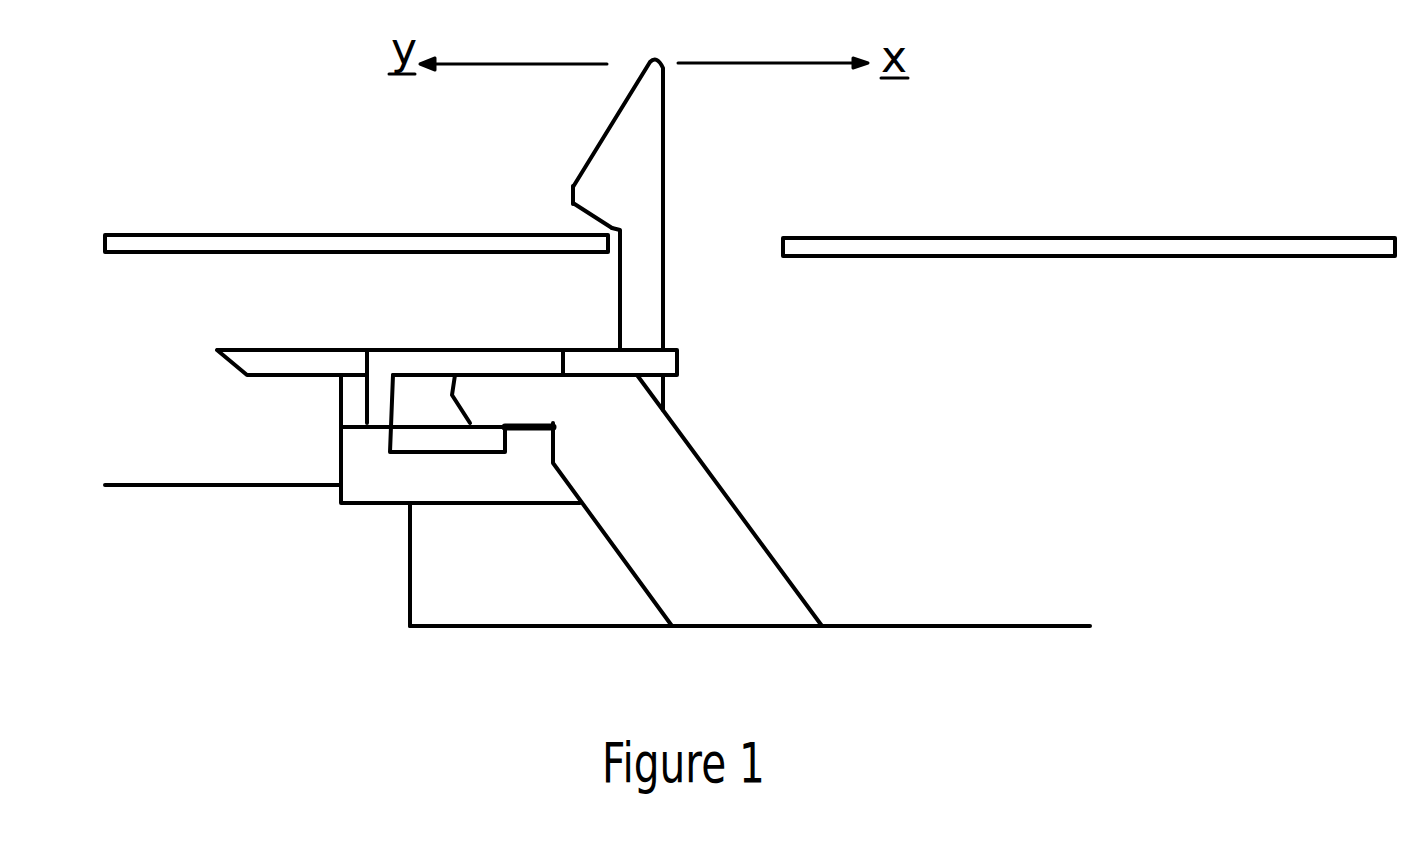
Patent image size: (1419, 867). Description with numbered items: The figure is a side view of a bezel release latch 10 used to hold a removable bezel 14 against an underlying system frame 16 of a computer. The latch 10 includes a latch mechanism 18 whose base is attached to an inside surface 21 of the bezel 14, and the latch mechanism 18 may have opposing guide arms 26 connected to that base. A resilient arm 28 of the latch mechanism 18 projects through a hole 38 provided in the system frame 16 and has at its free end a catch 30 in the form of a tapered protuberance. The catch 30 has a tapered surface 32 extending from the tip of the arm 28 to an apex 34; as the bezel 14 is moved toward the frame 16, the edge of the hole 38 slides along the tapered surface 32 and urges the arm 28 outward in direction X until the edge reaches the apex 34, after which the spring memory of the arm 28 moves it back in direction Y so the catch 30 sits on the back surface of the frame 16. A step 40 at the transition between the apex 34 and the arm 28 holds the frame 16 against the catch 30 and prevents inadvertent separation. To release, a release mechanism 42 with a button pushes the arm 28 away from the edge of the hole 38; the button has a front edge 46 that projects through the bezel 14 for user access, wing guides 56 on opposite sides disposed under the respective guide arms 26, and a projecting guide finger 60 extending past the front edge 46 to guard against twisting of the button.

The bezel release latch 10 is at (890, 382).
The bezel 14 is at (437, 639).
The system frame 16 is at (251, 227).
The latch mechanism 18 is at (734, 440).
The inside surface 21 is at (1000, 600).
The guide arms 26 is at (728, 500).
The arm 28 is at (665, 313).
The catch 30 is at (561, 184).
The tapered surface 32 is at (602, 119).
The apex 34 is at (561, 204).
The hole 38 is at (735, 230).
The step 40 is at (605, 237).
The release mechanism 42 is at (522, 518).
The front edge 46 is at (324, 435).
The wing guides 56 is at (397, 449).
The projecting guide finger 60 is at (278, 354).